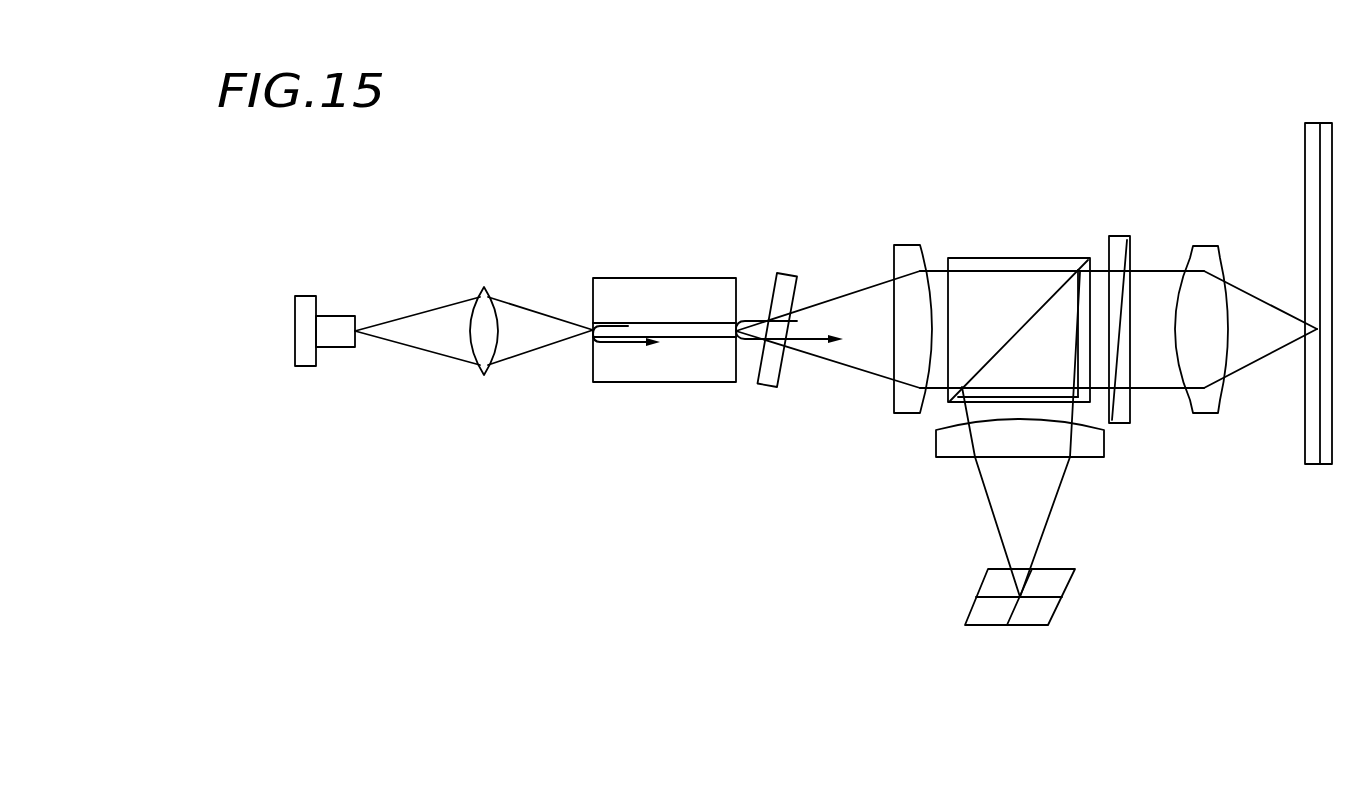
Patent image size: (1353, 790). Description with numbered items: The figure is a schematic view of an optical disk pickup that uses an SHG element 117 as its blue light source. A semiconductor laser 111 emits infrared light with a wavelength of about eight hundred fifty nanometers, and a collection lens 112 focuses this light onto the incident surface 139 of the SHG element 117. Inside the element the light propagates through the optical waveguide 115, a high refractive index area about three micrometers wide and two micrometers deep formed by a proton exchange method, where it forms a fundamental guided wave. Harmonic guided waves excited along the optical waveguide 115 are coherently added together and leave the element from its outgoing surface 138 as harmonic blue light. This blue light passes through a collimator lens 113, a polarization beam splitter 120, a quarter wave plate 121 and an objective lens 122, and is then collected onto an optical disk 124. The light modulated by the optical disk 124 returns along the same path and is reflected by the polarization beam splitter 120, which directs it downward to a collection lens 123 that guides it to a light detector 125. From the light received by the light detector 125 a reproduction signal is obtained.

The semiconductor laser 111 is at (307, 296).
The collection lens 112 is at (484, 287).
The collimator lens 113 is at (915, 245).
The optical waveguide 115 is at (677, 328).
The SHG element 117 is at (620, 278).
The polarization beam splitter 120 is at (1052, 258).
The 1/4 wave plate 121 is at (1124, 236).
The objective lens 122 is at (1213, 246).
The collection lens 123 is at (1103, 457).
The optical disk 124 is at (1312, 122).
The light detector 125 is at (1028, 625).
The outgoing surface 138 is at (737, 275).
The incident surface 139 is at (593, 362).